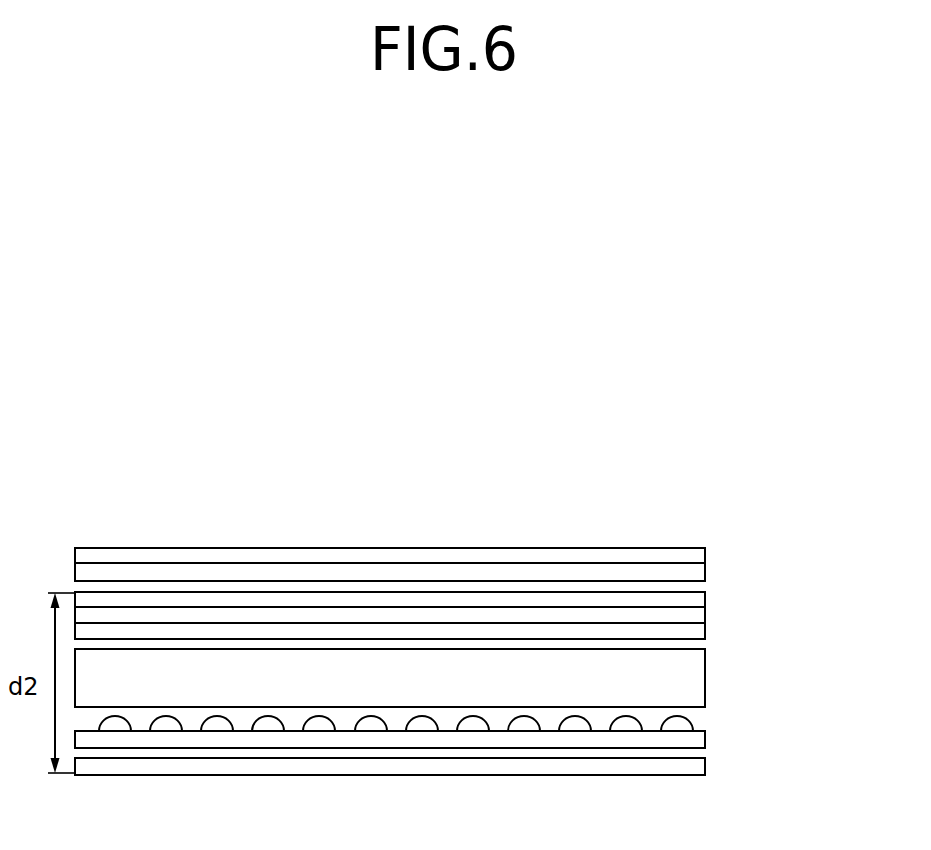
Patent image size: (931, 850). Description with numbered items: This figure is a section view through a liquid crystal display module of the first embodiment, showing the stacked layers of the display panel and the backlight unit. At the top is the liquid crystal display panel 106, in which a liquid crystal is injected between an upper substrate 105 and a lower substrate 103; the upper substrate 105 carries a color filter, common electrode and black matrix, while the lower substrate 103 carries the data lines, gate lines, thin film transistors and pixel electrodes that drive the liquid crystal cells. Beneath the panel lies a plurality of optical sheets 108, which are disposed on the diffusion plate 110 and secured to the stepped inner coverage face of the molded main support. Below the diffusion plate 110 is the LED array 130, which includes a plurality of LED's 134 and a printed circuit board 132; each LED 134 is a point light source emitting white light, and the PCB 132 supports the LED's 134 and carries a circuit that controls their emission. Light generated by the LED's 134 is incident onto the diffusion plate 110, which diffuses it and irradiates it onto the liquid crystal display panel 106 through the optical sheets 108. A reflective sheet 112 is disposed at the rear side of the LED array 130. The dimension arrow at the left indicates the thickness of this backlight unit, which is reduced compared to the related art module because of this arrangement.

The upper substrate 105 is at (706, 555).
The lower substrate 103 is at (706, 572).
The liquid crystal display panel 106 is at (788, 540).
The optical sheets 108 is at (706, 601).
The diffusion plate 110 is at (706, 672).
The LED 134 is at (668, 726).
The printed circuit board 132 is at (706, 740).
The LED array 130 is at (788, 700).
The reflective sheet 112 is at (706, 767).